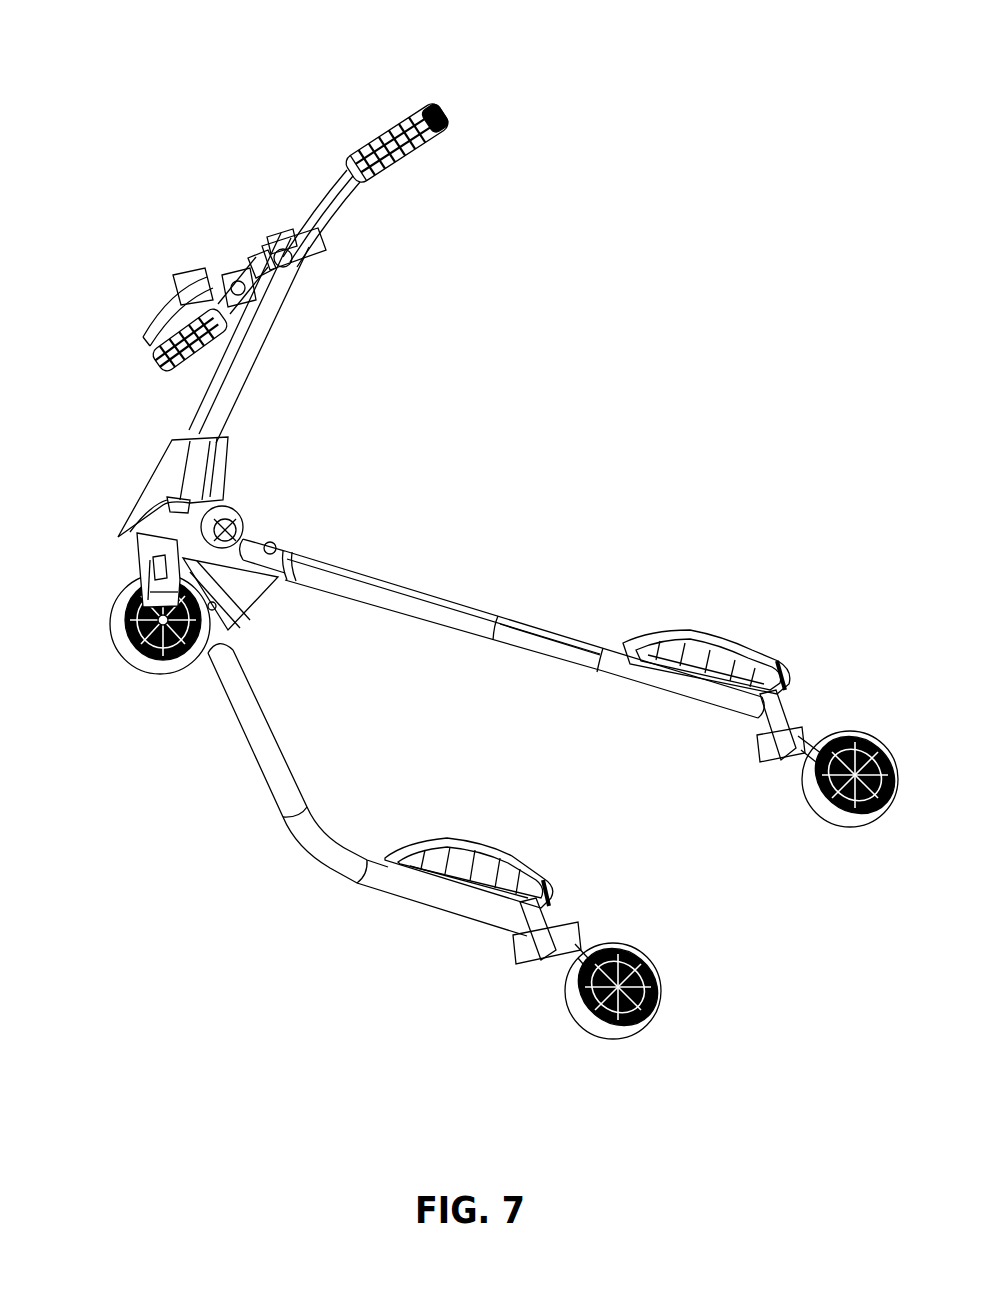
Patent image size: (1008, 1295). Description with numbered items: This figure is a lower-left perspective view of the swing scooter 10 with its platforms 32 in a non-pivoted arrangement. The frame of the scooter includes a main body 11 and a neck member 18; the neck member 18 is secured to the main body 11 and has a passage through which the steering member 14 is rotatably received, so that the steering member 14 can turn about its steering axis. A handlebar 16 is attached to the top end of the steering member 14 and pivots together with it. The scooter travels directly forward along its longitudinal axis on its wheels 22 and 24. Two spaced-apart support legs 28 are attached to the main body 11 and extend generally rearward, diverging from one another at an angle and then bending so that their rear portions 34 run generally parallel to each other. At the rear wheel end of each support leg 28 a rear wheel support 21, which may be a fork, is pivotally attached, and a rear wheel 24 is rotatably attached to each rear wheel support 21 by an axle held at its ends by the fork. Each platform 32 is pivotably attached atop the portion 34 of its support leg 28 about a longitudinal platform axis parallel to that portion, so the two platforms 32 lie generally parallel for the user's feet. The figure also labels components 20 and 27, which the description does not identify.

The swing scooter 10 is at (733, 128).
The main body 11 is at (253, 611).
The steering member 14 is at (207, 390).
The handlebar 16 is at (373, 140).
The neck member 18 is at (160, 482).
The front fork 20 is at (143, 553).
The rear wheel support 21 is at (820, 737).
The wheel 22 is at (147, 658).
The rear wheel 24 is at (860, 823).
The caster fork 27 is at (782, 757).
The support leg 28 is at (450, 600).
The platform 32 is at (710, 630).
The portion of the support leg 34 is at (748, 752).